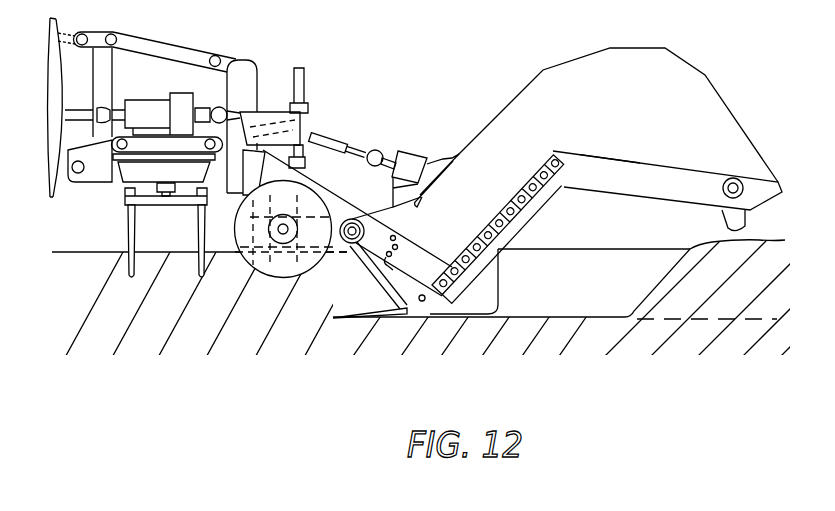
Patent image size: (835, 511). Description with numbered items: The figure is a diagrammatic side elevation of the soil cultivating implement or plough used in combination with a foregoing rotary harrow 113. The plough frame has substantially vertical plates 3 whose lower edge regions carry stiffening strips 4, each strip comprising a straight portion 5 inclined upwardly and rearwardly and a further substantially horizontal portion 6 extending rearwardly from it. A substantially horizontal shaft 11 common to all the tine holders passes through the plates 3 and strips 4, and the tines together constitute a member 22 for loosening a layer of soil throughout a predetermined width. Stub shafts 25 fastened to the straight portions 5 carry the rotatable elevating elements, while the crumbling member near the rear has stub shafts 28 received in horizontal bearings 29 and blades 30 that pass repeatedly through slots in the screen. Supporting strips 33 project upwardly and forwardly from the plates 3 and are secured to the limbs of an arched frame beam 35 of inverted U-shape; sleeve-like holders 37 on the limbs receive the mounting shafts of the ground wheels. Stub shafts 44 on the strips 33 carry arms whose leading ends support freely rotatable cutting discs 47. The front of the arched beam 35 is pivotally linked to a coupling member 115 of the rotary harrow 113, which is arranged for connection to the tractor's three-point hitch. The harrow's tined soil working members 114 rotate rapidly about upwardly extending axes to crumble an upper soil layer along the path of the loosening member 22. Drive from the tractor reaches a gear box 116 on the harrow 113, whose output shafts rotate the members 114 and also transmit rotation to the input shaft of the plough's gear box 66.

The substantially vertical plate 3 is at (536, 98).
The stiffening strip 4 is at (607, 158).
The straight portion 5 is at (523, 181).
The substantially horizontal portion 6 is at (650, 170).
The substantially horizontal shaft 11 is at (420, 302).
The loosening member 22 is at (358, 313).
The stub shaft 25 is at (527, 218).
The stub shaft 28 is at (723, 189).
The horizontal bearing 29 is at (736, 179).
The blade 30 is at (728, 222).
The supporting strip 33 is at (412, 255).
The arched frame beam 35 is at (253, 58).
The sleeve-like holder 37 is at (307, 120).
The stub shaft 44 is at (357, 215).
The cutting disc 47 is at (273, 265).
The gear box 66 is at (410, 163).
The rotary harrow 113 is at (118, 190).
The tined soil working member 114 is at (178, 198).
The coupling member 115 is at (109, 95).
The gear box 116 is at (153, 108).